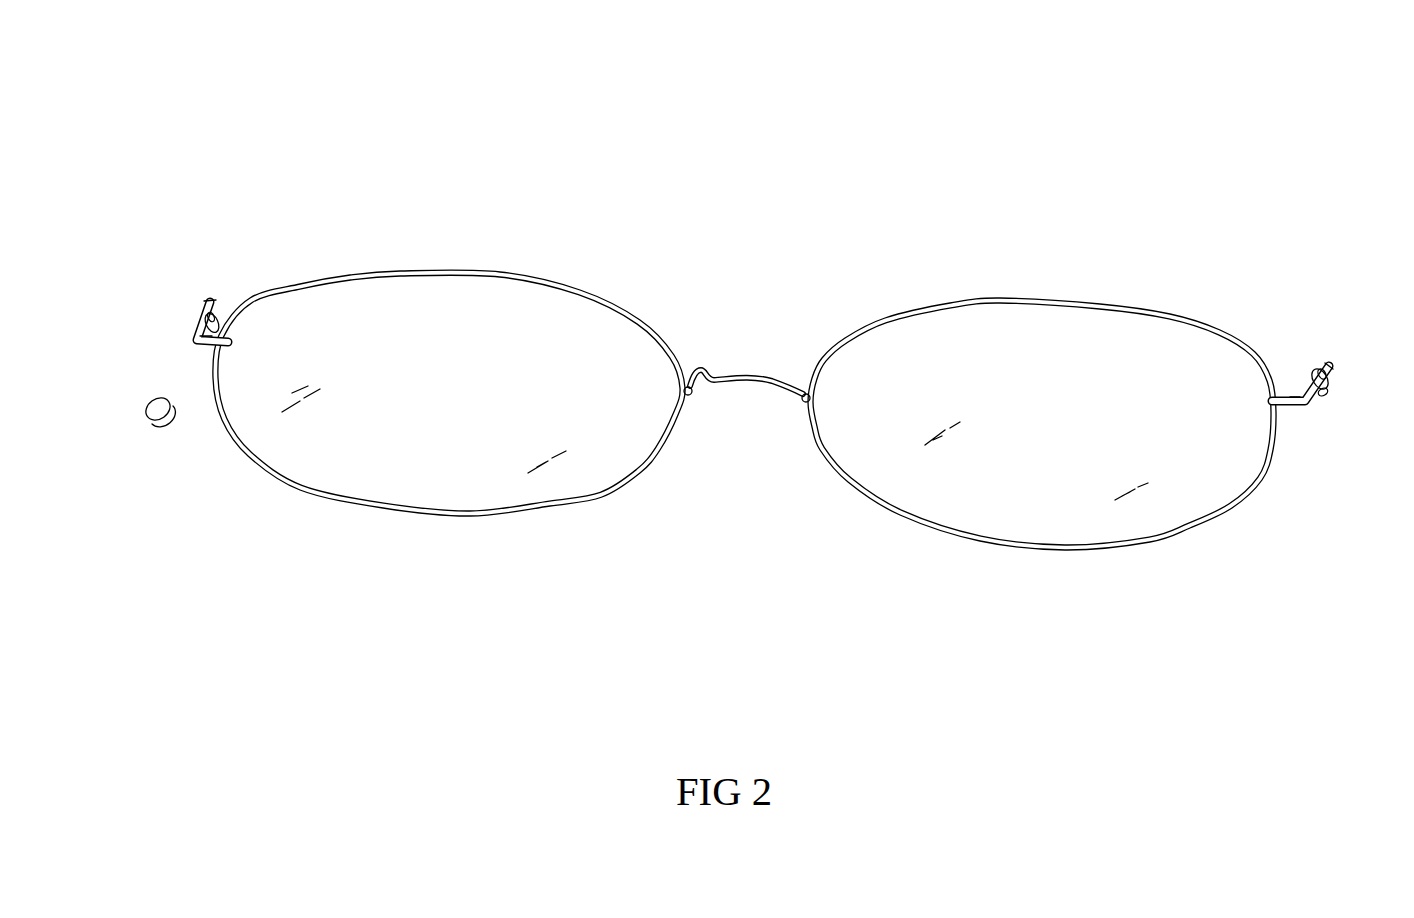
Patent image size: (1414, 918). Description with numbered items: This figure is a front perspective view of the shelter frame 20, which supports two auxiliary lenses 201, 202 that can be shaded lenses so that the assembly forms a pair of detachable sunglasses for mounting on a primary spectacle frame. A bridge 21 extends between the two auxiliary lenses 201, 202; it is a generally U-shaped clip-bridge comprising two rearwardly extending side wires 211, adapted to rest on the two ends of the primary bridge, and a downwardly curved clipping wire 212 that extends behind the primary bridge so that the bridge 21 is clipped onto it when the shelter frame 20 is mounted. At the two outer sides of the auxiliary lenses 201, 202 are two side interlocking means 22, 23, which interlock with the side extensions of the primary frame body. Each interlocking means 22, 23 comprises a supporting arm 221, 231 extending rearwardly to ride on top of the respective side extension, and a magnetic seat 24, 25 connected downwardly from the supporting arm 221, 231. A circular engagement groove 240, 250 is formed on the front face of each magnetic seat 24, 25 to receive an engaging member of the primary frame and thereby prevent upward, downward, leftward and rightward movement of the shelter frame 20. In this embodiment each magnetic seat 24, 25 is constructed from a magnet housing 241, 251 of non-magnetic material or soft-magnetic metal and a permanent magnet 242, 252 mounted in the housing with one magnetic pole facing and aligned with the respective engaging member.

The shelter frame 20 is at (912, 160).
The auxiliary lens 201 is at (1064, 528).
The auxiliary lens 202 is at (473, 487).
The bridge 21 is at (761, 344).
The side wire 211 is at (688, 384).
The clipping wire 212 is at (766, 382).
The side interlocking means 22 is at (1290, 397).
The supporting arm 221 is at (1310, 365).
The side interlocking means 23 is at (204, 345).
The supporting arm 231 is at (221, 312).
The magnetic seat 24 is at (1351, 340).
The engagement groove 240 is at (1308, 411).
The magnet housing 241 is at (1334, 372).
The permanent magnet 242 is at (1328, 396).
The magnetic seat 25 is at (131, 339).
The engagement groove 250 is at (184, 349).
The magnet housing 251 is at (197, 312).
The permanent magnet 252 is at (152, 420).